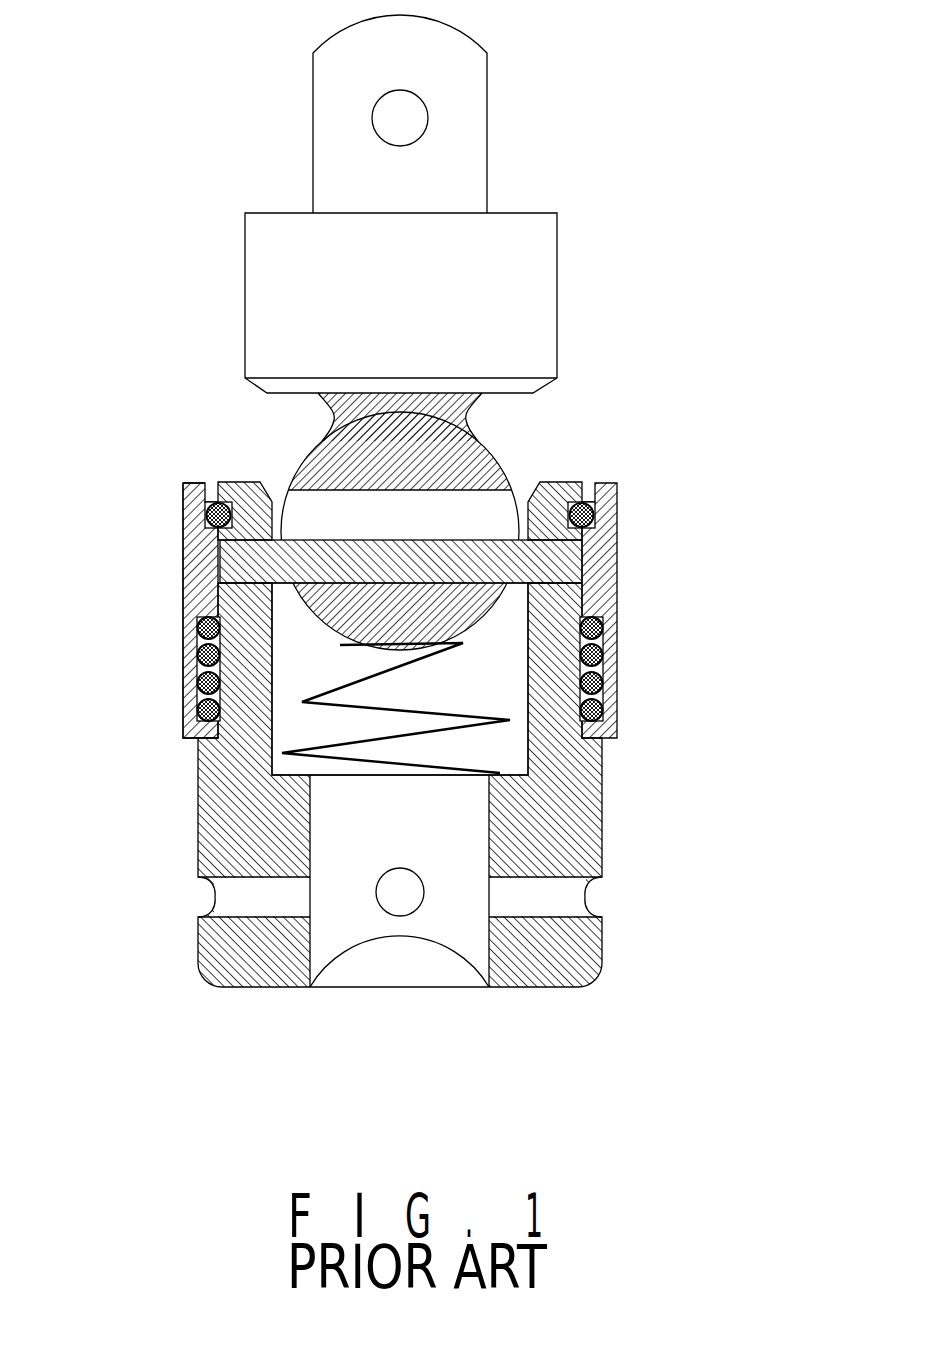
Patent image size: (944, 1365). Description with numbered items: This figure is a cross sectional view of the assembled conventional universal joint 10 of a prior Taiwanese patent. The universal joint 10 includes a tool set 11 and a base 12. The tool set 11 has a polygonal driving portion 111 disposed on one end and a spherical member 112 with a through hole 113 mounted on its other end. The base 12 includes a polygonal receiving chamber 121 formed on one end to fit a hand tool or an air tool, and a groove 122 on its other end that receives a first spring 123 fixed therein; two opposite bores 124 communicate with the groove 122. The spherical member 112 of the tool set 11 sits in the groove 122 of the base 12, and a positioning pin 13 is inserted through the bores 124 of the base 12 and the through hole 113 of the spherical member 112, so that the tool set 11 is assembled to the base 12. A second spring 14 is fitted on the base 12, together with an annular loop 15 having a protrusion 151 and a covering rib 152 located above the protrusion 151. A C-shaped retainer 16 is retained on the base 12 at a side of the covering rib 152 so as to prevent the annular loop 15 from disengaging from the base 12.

The universal joint 10 is at (150, 192).
The tool set 11 is at (520, 303).
The connecting tab 111 is at (467, 142).
The spherical member 112 is at (500, 450).
The through hole 113 is at (492, 505).
The base 12 is at (580, 833).
The polygonal receiving chamber 121 is at (450, 922).
The groove 122 is at (508, 670).
The first spring 123 is at (437, 735).
The bores 124 is at (565, 590).
The positioning pin 13 is at (550, 563).
The second spring 14 is at (200, 715).
The annular loop 15 is at (185, 660).
The protrusion 151 is at (185, 557).
The covering rib 152 is at (185, 502).
The C-shaped retainer 16 is at (213, 500).